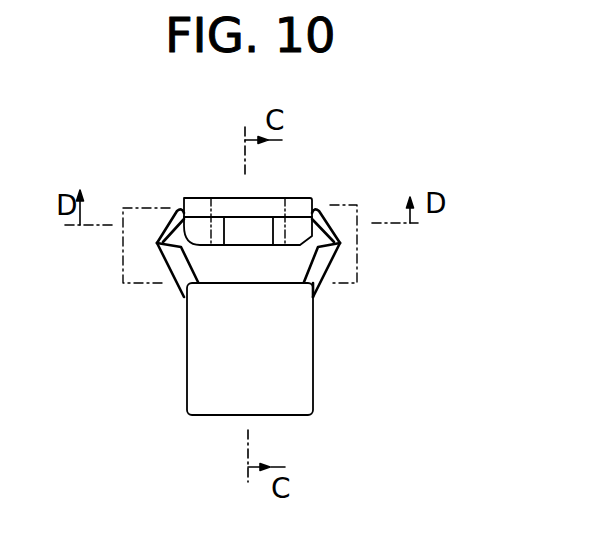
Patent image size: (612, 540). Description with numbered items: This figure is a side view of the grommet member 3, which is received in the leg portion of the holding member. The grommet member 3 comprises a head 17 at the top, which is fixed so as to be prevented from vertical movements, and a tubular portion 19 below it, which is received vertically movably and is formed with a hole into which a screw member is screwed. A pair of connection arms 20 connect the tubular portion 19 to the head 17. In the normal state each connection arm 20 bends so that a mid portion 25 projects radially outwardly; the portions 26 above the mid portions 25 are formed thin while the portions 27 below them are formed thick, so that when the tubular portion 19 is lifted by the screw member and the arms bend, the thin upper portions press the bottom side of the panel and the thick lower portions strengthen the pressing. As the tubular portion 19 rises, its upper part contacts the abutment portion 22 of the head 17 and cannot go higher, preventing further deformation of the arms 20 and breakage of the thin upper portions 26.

The grommet member 3 is at (167, 178).
The head 17 is at (222, 198).
The tubular portion 19 is at (205, 368).
The connection arms 20 is at (176, 266).
The abutment portion 22 is at (157, 243).
The mid portion 25 is at (343, 245).
The upper portions 26 is at (330, 208).
The lower portions 27 is at (332, 273).